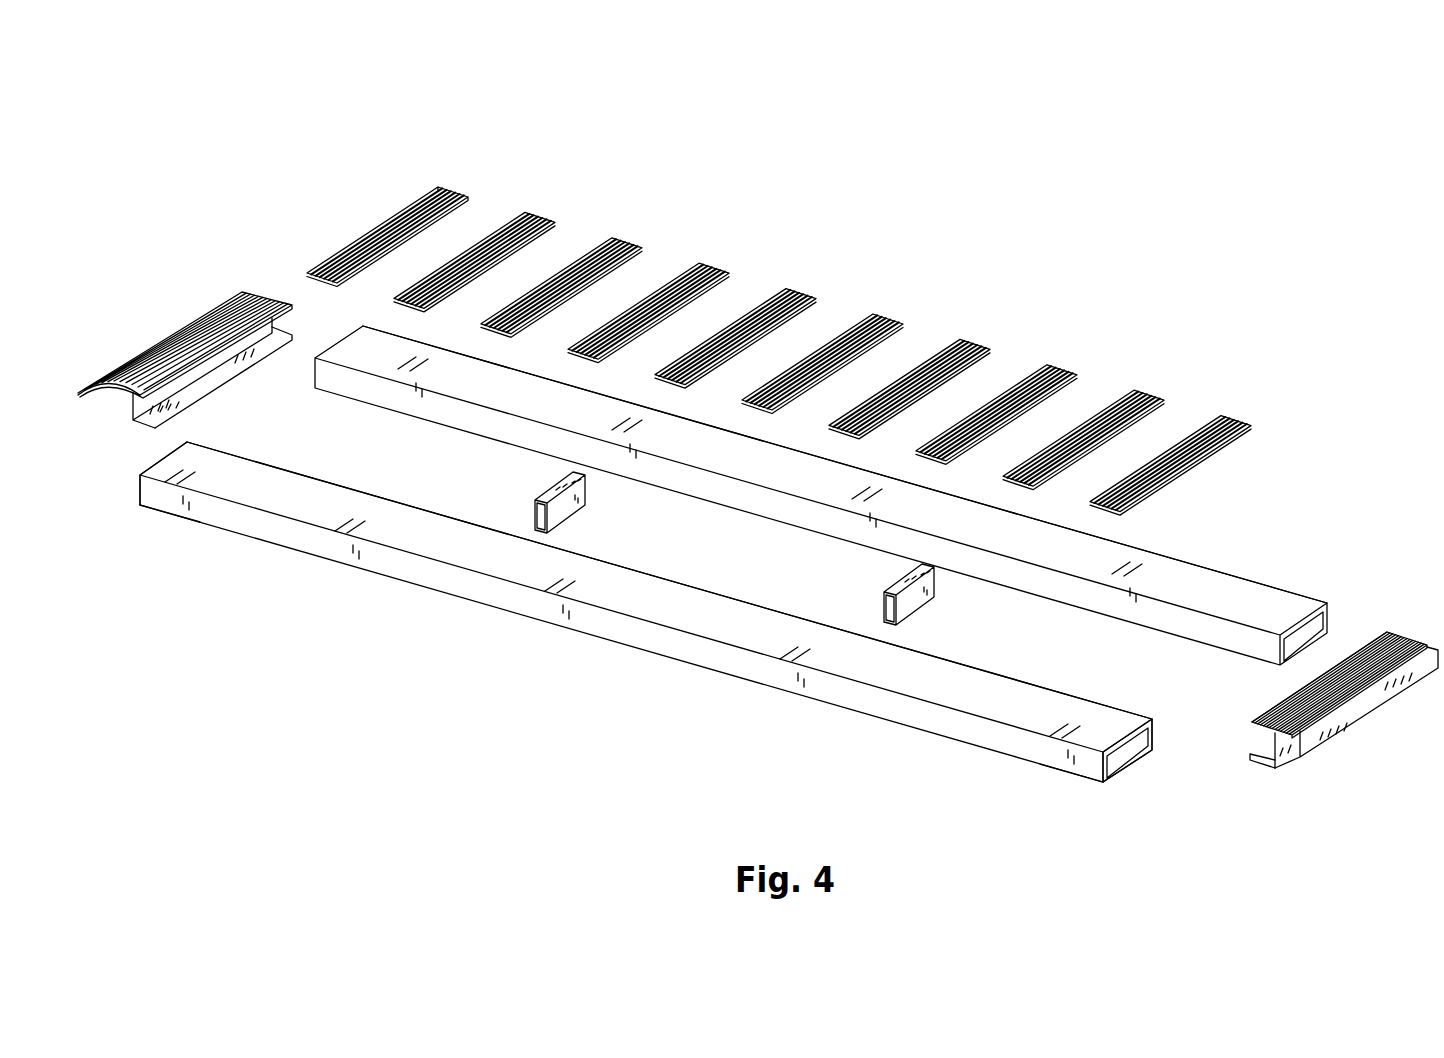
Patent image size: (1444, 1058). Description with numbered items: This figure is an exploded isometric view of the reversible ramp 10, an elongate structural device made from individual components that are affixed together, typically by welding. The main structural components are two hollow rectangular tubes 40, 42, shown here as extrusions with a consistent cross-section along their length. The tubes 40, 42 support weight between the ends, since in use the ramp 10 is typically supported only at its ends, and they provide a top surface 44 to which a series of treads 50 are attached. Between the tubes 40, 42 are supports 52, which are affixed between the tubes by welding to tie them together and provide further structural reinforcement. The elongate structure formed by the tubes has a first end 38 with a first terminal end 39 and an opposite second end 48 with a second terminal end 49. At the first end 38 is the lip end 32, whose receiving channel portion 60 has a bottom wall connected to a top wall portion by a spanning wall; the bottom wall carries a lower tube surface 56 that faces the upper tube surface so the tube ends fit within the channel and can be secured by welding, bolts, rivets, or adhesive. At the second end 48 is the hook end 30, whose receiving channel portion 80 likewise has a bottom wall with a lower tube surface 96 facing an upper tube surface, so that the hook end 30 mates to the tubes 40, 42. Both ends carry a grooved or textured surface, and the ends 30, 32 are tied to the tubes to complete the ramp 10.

The reversible ramp 10 is at (1026, 158).
The hook end 30 is at (1399, 616).
The lip end 32 is at (160, 316).
The first end 38 is at (172, 540).
The first terminal end 39 is at (153, 460).
The hollow rectangular tube 40 is at (1197, 577).
The hollow rectangular tube 42 is at (703, 652).
The top surface 44 is at (1258, 605).
The second end 48 is at (1067, 793).
The second terminal end 49 is at (1123, 772).
The treads 50 is at (865, 317).
The supports 52 is at (547, 497).
The lower tube surface 56 is at (193, 392).
The receiving channel portion 60 is at (120, 426).
The receiving channel portion 80 is at (1275, 786).
The lower tube surface 96 is at (1265, 747).